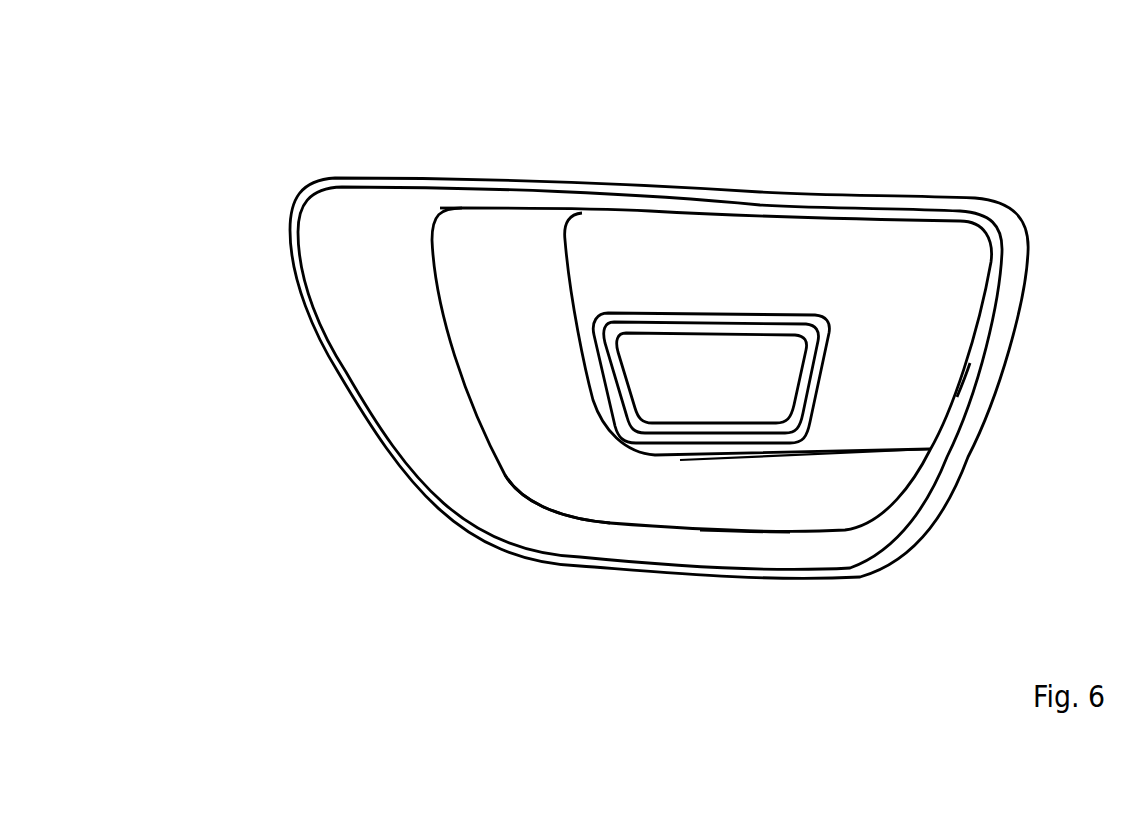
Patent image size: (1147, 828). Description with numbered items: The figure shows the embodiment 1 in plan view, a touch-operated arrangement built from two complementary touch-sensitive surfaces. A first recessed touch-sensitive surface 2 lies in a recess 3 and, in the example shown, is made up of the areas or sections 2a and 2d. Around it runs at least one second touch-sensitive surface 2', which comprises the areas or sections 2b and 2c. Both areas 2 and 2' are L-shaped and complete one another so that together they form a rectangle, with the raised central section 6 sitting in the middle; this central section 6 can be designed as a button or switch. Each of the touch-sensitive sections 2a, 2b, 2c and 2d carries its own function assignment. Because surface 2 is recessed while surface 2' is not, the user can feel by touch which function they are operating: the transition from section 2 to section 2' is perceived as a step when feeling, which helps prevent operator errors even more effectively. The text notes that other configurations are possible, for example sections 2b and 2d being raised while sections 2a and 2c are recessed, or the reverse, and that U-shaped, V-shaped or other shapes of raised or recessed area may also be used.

The operating device / control element assembly 1 is at (1004, 121).
The first recessed touch-sensitive surface 2 is at (774, 361).
The second touch-sensitive surface 2' is at (467, 499).
The touch-sensitive surface section 2a is at (782, 237).
The touch-sensitive surface section 2b is at (470, 318).
The touch-sensitive surface section 2c is at (722, 518).
The touch-sensitive surface section 2d is at (945, 362).
The recess 3 is at (985, 325).
The raised central section 6 is at (765, 396).